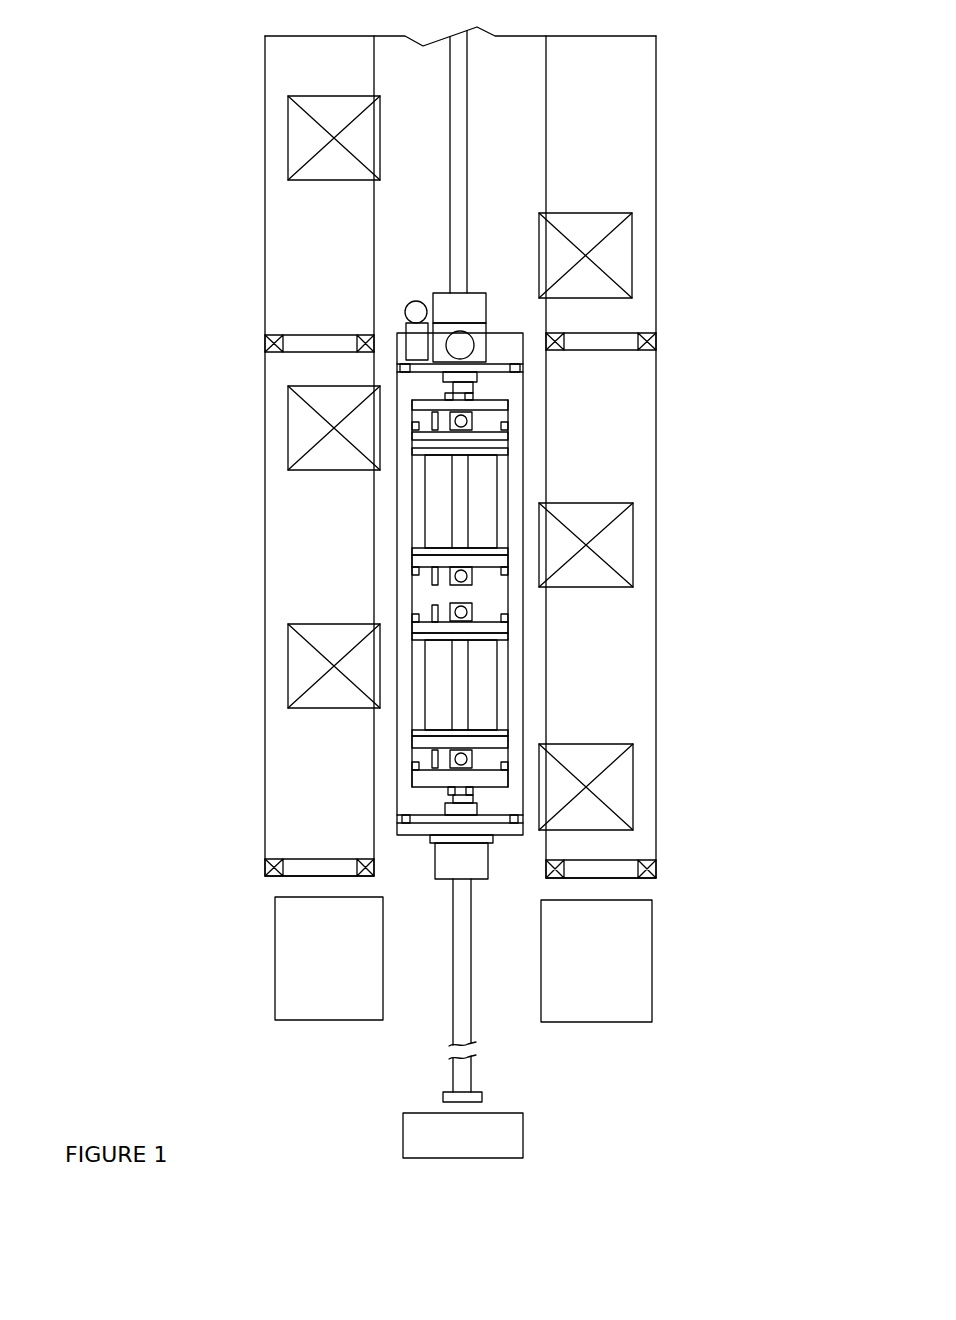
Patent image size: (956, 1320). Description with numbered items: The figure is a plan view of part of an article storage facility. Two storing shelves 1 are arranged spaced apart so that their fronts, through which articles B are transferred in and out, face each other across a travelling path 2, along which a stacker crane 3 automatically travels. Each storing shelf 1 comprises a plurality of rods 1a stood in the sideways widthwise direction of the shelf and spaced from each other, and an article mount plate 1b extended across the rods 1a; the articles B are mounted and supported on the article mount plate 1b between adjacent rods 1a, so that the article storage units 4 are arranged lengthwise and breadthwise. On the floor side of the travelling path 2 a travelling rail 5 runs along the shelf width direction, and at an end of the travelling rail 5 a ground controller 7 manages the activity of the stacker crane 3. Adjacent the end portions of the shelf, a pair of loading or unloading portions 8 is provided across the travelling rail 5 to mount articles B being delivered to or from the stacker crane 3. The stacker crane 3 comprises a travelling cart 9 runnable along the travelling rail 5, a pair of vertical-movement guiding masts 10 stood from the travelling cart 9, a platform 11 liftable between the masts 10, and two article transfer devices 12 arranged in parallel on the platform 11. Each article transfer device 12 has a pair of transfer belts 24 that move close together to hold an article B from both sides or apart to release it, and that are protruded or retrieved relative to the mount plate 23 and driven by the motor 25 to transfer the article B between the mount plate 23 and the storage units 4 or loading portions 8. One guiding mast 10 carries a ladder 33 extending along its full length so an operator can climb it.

The storing shelf 1 is at (232, 385).
The rod 1a is at (355, 333).
The article mount plate 1b is at (285, 69).
The travelling path 2 is at (424, 237).
The stacker crane 3 is at (425, 848).
The article storage unit 4 is at (290, 215).
The travelling rail 5 is at (468, 985).
The ground controller 7 is at (520, 1134).
The loading or unloading portion 8 is at (280, 1008).
The travelling cart 9 is at (506, 340).
The vertical-movement guiding mast 10 is at (473, 390).
The platform 11 is at (425, 780).
The article transfer device 12 is at (510, 493).
The mount plate 23 is at (440, 517).
The transfer belt 24 is at (495, 452).
The motor 25 is at (465, 425).
The ladder 33 is at (470, 848).
The article B is at (290, 154).